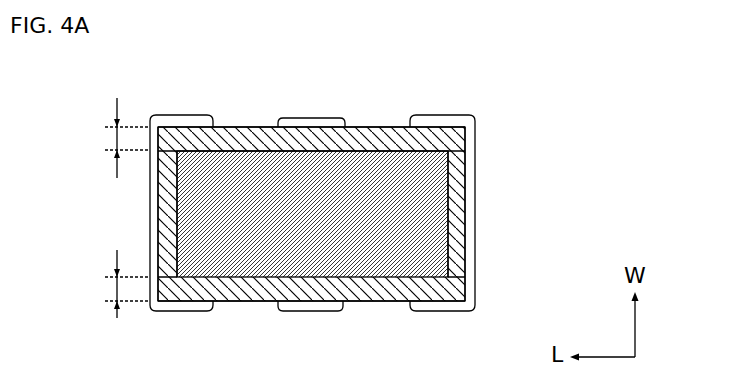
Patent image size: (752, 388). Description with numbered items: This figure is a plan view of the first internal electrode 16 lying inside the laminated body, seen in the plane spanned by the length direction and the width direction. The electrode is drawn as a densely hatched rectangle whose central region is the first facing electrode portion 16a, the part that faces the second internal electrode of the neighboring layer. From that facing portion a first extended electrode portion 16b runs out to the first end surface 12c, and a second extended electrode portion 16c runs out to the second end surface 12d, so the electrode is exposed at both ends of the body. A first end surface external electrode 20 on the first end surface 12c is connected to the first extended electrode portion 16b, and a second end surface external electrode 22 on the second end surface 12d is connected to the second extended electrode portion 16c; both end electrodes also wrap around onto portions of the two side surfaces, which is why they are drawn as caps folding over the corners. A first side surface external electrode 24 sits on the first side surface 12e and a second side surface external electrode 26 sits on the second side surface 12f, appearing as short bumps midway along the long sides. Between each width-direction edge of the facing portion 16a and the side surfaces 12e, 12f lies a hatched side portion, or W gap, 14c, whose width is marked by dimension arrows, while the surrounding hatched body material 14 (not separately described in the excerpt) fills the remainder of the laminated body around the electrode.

The multilayer body 14 is at (385, 138).
The side portion (W gap) 14c is at (106, 208).
The first internal electrode 16 is at (378, 286).
The first facing electrode portion 16a is at (285, 160).
The first extended electrode portion 16b is at (172, 220).
The second extended electrode portion 16c is at (457, 220).
The first end surface 12c is at (158, 203).
The second end surface 12d is at (466, 201).
The first side surface 12e is at (223, 126).
The second side surface 12f is at (247, 303).
The first end surface external electrode 20 is at (172, 122).
The second end surface external electrode 22 is at (445, 122).
The first side surface external electrode 24 is at (325, 120).
The second side surface external electrode 26 is at (317, 308).